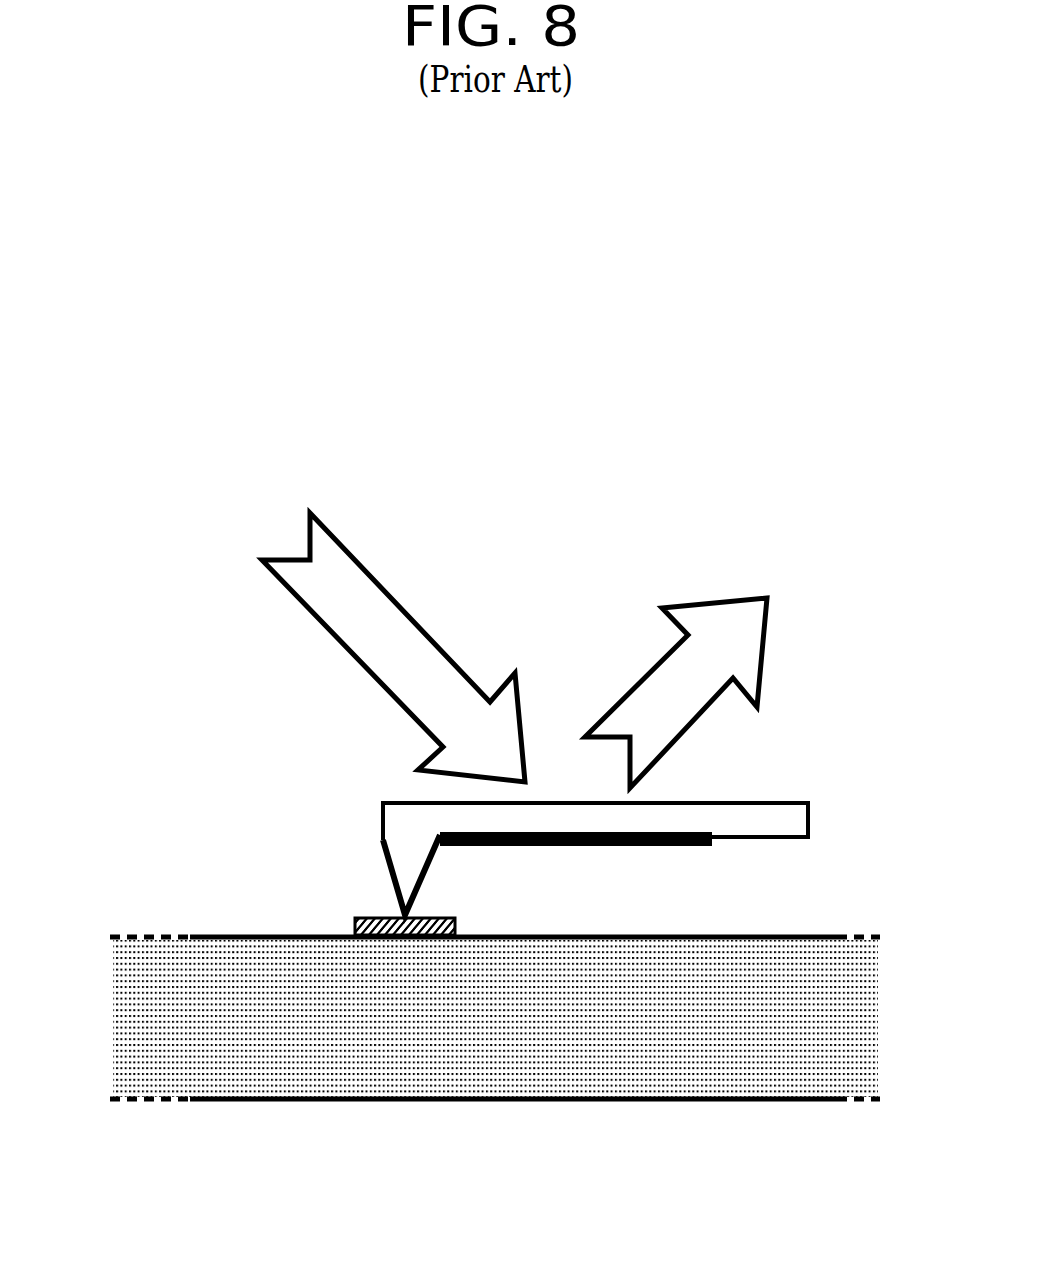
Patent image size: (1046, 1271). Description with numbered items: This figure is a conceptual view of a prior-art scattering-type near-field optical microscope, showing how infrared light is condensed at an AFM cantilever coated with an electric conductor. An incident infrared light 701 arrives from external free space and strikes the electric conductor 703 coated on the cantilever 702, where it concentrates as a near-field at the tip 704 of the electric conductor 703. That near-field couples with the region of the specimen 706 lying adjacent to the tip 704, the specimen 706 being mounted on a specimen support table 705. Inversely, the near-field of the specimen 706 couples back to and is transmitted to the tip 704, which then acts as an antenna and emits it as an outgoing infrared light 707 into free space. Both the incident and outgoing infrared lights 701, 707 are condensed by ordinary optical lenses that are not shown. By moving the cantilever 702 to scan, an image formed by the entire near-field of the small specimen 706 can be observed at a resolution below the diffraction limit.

The infrared light 701 is at (392, 650).
The cantilever 702 is at (733, 817).
The electric conductor 703 is at (525, 845).
The tip 704 is at (385, 906).
The specimen support table 705 is at (437, 1022).
The specimen 706 is at (357, 918).
The infrared light 707 is at (635, 712).